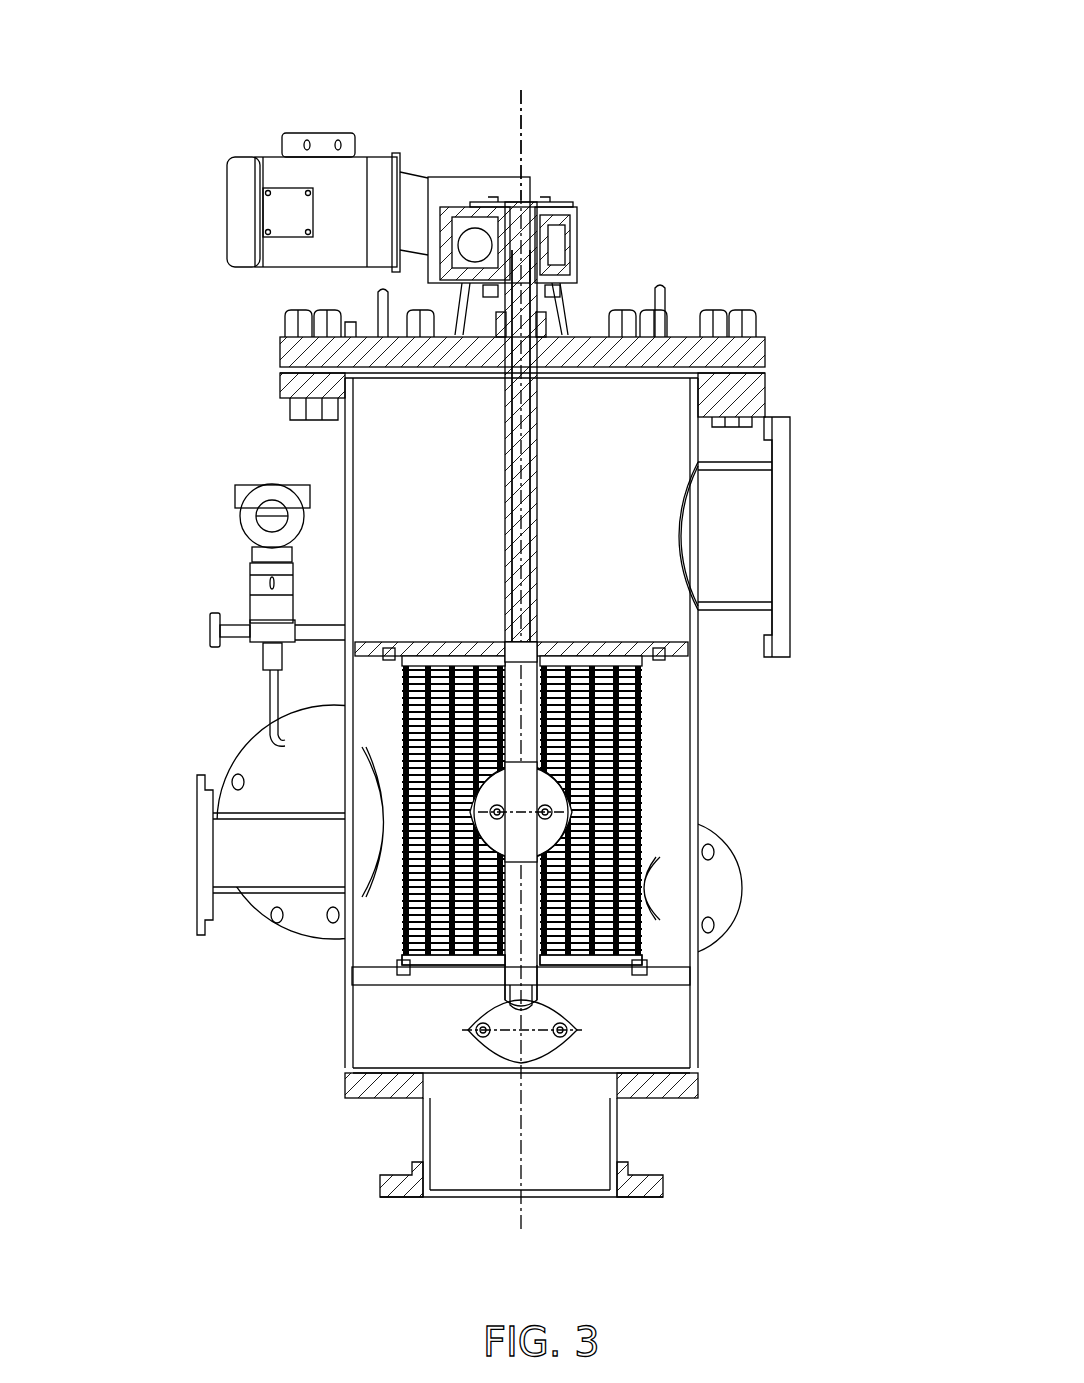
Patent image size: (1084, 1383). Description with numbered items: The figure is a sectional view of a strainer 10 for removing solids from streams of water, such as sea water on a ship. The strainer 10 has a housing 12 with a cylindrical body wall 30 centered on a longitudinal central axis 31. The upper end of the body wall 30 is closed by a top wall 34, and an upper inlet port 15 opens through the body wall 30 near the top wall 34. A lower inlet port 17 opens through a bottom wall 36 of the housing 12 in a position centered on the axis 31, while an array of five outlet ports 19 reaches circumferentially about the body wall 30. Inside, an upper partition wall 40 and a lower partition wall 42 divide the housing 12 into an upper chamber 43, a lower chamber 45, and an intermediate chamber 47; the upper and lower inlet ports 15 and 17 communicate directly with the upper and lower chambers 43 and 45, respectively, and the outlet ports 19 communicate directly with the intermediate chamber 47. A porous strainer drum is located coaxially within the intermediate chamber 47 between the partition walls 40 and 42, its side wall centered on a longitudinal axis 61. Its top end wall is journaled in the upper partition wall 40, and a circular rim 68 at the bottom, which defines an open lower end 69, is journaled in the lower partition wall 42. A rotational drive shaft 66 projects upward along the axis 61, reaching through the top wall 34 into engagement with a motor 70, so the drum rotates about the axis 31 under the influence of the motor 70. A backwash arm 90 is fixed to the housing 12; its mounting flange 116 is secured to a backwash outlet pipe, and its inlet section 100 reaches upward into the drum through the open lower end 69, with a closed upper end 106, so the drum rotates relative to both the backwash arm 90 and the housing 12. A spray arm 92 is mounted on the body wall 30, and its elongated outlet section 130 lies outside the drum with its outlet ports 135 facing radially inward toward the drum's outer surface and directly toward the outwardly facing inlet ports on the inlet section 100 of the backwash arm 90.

The strainer 10 is at (280, 72).
The housing 12 is at (340, 447).
The upper inlet port 15 is at (793, 497).
The lower inlet port 17 is at (490, 1168).
The outlet ports 19 is at (362, 862).
The body wall 30 is at (345, 478).
The central axis 31 is at (516, 108).
The top wall 34 is at (288, 352).
The bottom wall 36 is at (383, 1185).
The upper partition wall 40 is at (370, 640).
The lower partition wall 42 is at (380, 963).
The upper chamber 43 is at (428, 463).
The lower chamber 45 is at (393, 1040).
The intermediate chamber 47 is at (393, 720).
The longitudinal axis 61 is at (540, 537).
The rotational drive shaft 66 is at (505, 538).
The circular rim 68 is at (440, 970).
The open lower end 69 is at (487, 967).
The motor 70 is at (238, 205).
The backwash arm 90 is at (508, 675).
The spray arm 92 is at (640, 793).
The inlet section 100 is at (647, 957).
The closed upper end 106 is at (540, 645).
The mounting flange 116 is at (535, 1050).
The outlet section 130 is at (642, 745).
The outlet ports 135 is at (642, 725).